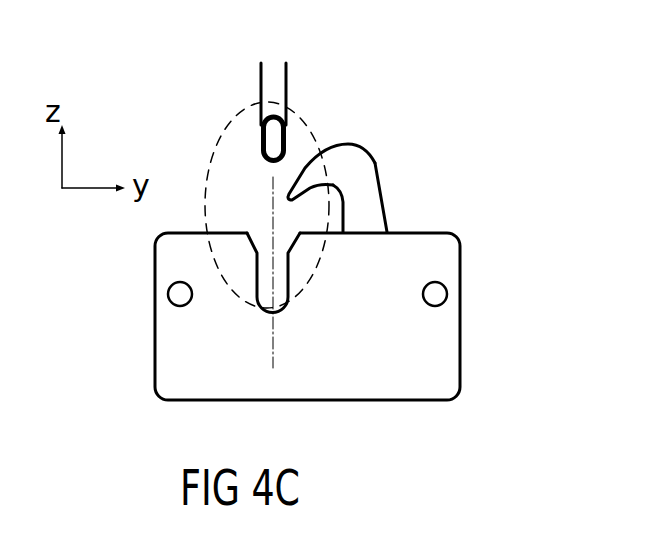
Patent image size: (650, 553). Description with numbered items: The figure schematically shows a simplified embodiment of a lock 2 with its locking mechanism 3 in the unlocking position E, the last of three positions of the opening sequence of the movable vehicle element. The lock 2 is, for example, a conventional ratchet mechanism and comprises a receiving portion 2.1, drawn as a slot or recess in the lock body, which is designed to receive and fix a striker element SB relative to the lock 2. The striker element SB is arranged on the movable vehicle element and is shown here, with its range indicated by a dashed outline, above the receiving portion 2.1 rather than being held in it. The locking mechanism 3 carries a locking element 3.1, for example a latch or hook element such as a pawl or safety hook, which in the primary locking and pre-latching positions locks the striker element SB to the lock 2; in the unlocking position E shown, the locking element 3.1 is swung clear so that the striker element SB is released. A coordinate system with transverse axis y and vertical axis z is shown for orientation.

The lock 2 is at (307, 212).
The receiving portion 2.1 is at (288, 298).
The locking mechanism 3 is at (386, 182).
The locking element 3.1 is at (362, 165).
The striker element SB is at (272, 142).
The unlocking position E is at (515, 74).